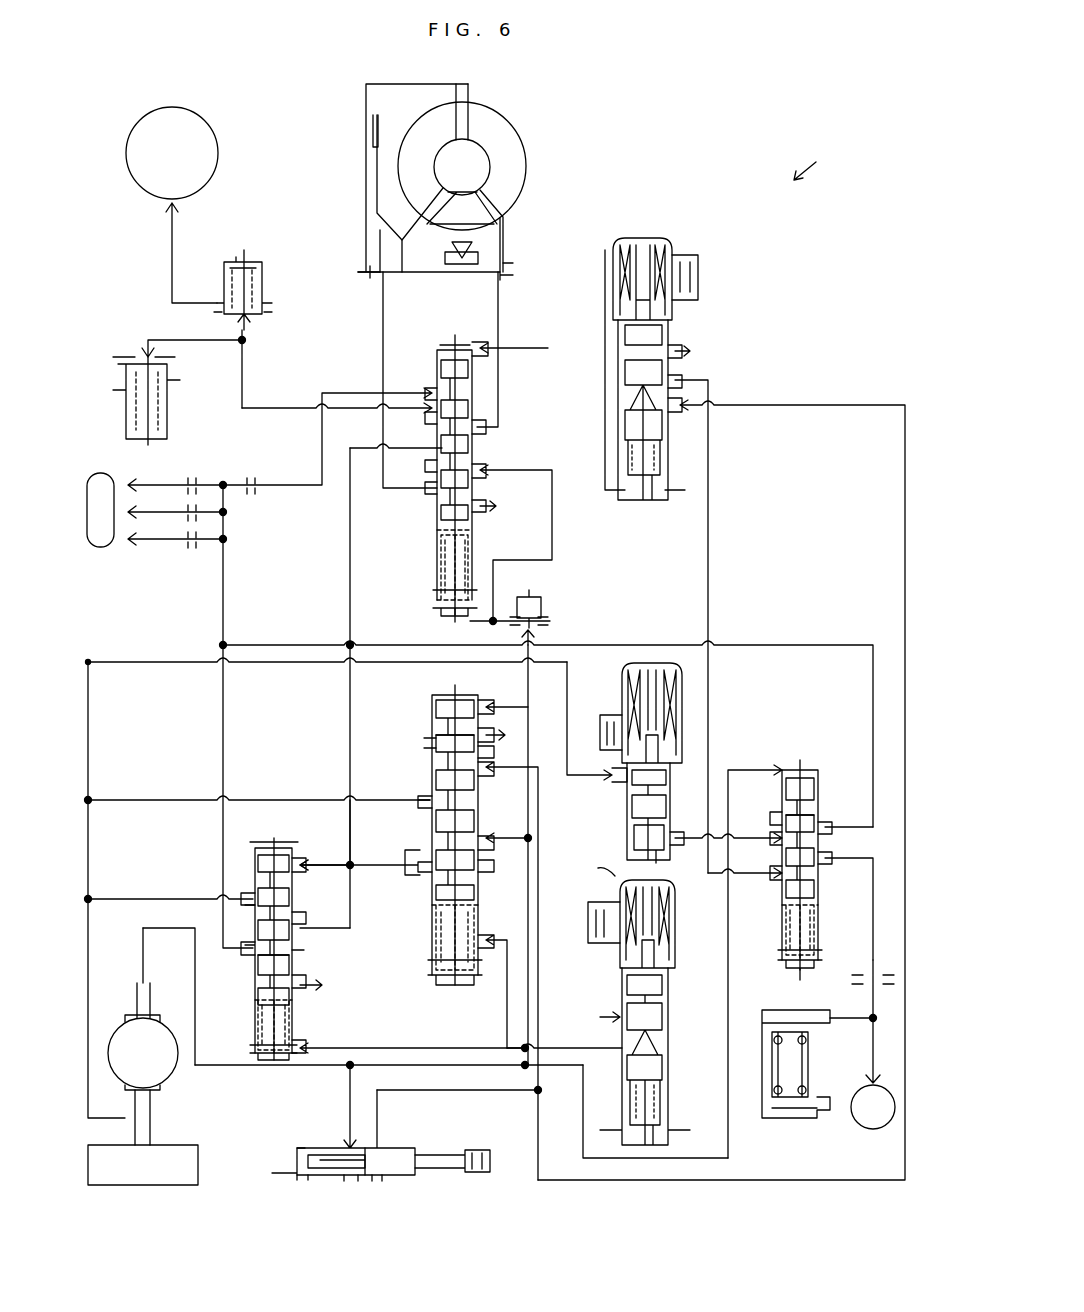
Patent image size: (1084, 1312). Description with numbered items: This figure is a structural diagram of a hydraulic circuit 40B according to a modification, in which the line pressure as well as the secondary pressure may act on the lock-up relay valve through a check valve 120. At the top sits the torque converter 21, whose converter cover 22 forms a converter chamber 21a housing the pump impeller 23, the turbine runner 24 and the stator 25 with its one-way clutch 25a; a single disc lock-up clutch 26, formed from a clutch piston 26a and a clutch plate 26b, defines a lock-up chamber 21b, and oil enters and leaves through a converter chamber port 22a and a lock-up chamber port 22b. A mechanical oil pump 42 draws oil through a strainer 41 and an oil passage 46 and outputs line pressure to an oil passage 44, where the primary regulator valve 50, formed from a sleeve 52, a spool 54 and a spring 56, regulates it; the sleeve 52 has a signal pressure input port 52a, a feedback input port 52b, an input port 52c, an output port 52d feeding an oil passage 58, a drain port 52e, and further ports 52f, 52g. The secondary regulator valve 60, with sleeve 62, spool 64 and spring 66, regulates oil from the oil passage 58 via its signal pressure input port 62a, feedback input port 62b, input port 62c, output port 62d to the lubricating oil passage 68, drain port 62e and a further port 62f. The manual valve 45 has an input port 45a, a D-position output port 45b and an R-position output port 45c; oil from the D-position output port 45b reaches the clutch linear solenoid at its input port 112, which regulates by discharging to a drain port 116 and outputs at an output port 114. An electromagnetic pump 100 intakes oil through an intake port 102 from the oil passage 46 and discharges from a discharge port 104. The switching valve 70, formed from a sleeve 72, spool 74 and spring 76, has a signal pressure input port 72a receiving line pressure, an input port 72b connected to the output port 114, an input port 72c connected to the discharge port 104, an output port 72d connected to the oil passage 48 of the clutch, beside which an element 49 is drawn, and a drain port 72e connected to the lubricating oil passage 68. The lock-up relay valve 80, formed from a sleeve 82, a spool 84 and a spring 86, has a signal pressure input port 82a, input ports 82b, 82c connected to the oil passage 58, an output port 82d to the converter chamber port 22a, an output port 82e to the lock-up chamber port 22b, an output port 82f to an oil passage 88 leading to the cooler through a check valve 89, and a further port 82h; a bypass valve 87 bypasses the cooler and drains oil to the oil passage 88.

The torque converter 21 is at (424, 191).
The converter chamber 21a is at (468, 167).
The lock-up chamber 21b is at (380, 250).
The converter cover 22 is at (366, 98).
The converter chamber port 22a is at (510, 278).
The lock-up chamber port 22b is at (368, 276).
The pump impeller 23 is at (438, 106).
The turbine runner 24 is at (510, 118).
The stator 25 is at (500, 218).
The one-way clutch 25a is at (452, 248).
The single disc lock-up clutch 26 is at (330, 177).
The clutch piston 26a is at (385, 222).
The clutch plate 26b is at (373, 136).
The hydraulic circuit 40B is at (825, 164).
The strainer 41 is at (172, 1150).
The mechanical oil pump 42 is at (178, 1072).
The oil passage 44 is at (365, 1134).
The manual valve 45 is at (441, 1128).
The input port 45a is at (346, 1146).
The D-position output port 45b is at (380, 1146).
The R-position output port 45c is at (294, 1146).
The oil passage 46 is at (150, 1118).
The oil passage 48 is at (868, 968).
The accumulator 49 is at (792, 1010).
The primary regulator valve 50 is at (419, 923).
The sleeve 52 is at (480, 690).
The signal pressure input port 52a is at (486, 968).
The feedback input port 52b is at (484, 706).
The input port 52c is at (484, 866).
The output port 52d is at (418, 860).
The drain port 52e is at (424, 796).
The line pressure port 52f is at (484, 772).
The drain port 52g is at (484, 742).
The spool 54 is at (430, 738).
The spring 56 is at (480, 910).
The oil passage 58 is at (350, 720).
The secondary regulator valve 60 is at (365, 937).
The sleeve 62 is at (262, 848).
The signal pressure input port 62a is at (298, 1040).
The feedback input port 62b is at (300, 852).
The input port 62c is at (300, 910).
The output port 62d is at (252, 950).
The drain port 62e is at (252, 894).
The drain port 62f is at (300, 982).
The spool 64 is at (298, 952).
The spring 66 is at (292, 1014).
The lubricating oil passage 68 is at (223, 625).
The switching valve 70 is at (819, 940).
The sleeve 72 is at (812, 768).
The signal pressure input port 72a is at (775, 770).
The input port 72b is at (774, 878).
The input port 72c is at (774, 844).
The output port 72d is at (822, 840).
The drain port 72e is at (832, 830).
The spool 74 is at (784, 810).
The spring 76 is at (816, 906).
The lock-up relay valve 80 is at (467, 447).
The sleeve 82 is at (446, 340).
The signal pressure input port 82a is at (476, 342).
The input port 82b is at (432, 464).
The input port 82c is at (482, 478).
The output port 82d is at (482, 436).
The output port 82e is at (432, 488).
The output port 82f is at (430, 418).
The releasing chamber port 82h is at (432, 388).
The spool 84 is at (434, 444).
The spring 86 is at (437, 545).
The bypass valve 87 is at (124, 360).
The oil passage 88 is at (242, 390).
The check valve 89 is at (258, 262).
The electromagnetic pump 100 is at (622, 708).
The intake port 102 is at (612, 772).
The discharge port 104 is at (670, 850).
The input port 112 is at (676, 412).
The output port 114 is at (678, 386).
The drain port 116 is at (676, 342).
The check valve 120 is at (541, 596).